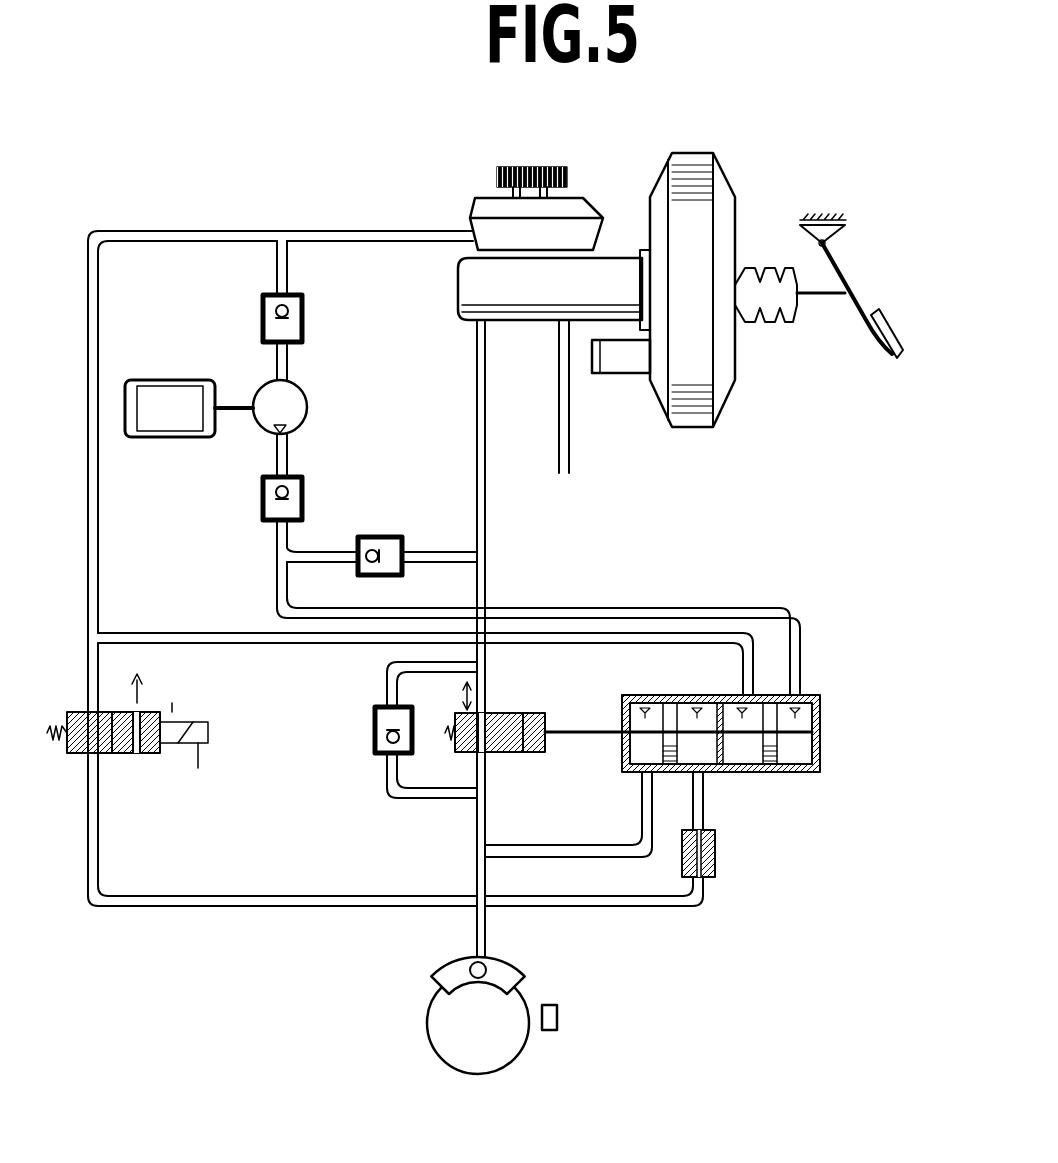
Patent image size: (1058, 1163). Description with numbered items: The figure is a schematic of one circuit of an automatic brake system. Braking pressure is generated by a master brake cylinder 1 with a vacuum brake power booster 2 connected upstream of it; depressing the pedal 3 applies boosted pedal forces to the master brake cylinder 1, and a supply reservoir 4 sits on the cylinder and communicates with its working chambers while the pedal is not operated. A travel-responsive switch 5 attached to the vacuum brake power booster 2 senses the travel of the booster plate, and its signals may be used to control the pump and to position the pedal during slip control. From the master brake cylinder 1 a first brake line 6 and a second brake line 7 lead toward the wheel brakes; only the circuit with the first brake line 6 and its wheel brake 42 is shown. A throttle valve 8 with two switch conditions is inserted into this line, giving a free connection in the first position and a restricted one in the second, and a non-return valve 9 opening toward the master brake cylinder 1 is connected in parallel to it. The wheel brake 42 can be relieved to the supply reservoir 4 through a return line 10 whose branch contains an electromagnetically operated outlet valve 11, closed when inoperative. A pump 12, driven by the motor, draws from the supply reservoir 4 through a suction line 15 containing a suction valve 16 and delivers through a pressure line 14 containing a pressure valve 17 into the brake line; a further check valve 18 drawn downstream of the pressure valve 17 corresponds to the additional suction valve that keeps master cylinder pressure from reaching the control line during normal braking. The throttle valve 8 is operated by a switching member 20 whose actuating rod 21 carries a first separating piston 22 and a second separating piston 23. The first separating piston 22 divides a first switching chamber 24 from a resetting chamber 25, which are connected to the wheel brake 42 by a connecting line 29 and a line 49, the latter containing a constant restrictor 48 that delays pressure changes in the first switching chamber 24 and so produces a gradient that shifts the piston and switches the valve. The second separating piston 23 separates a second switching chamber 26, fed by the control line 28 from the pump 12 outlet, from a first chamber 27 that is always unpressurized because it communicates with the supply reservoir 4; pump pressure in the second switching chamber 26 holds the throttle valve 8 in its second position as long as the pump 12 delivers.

The master brake cylinder 1 is at (458, 286).
The vacuum brake power booster 2 is at (738, 200).
The pedal 3 is at (890, 320).
The supply reservoir 4 is at (592, 205).
The travel-responsive switch 5 is at (624, 373).
The first brake line 6 is at (477, 355).
The second brake line 7 is at (559, 355).
The throttle valve 8 is at (545, 752).
The non-return valve 9 is at (375, 728).
The return line 10 is at (88, 700).
The outlet valve 11 is at (112, 755).
The pump 12 is at (296, 404).
The pressure line 14 is at (277, 545).
The suction line 15 is at (287, 268).
The suction valve 16 is at (302, 322).
The pressure valve 17 is at (302, 493).
The check valve 18 is at (400, 540).
The switching member 20 is at (839, 712).
The actuating rod 21 is at (578, 732).
The first separating piston 22 is at (670, 703).
The second separating piston 23 is at (770, 762).
The first switching chamber 24 is at (704, 703).
The resetting chamber 25 is at (648, 700).
The second switching chamber 26 is at (800, 755).
The first chamber 27 is at (740, 755).
The control line 28 is at (596, 607).
The connecting line 29 is at (553, 845).
The wheel brake 42 is at (486, 965).
The constant restrictor 48 is at (715, 858).
The connecting line 49 is at (577, 897).